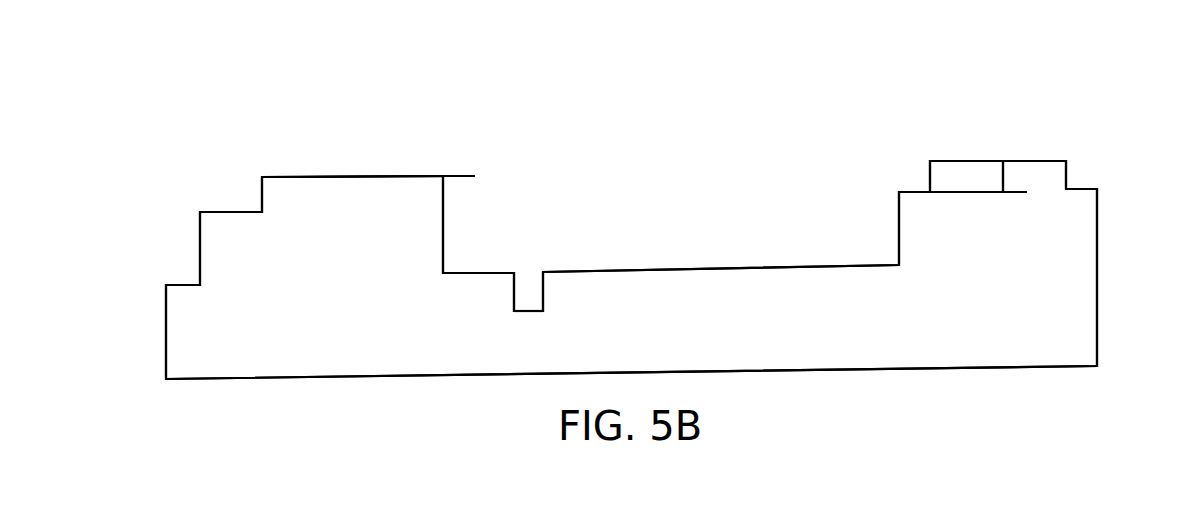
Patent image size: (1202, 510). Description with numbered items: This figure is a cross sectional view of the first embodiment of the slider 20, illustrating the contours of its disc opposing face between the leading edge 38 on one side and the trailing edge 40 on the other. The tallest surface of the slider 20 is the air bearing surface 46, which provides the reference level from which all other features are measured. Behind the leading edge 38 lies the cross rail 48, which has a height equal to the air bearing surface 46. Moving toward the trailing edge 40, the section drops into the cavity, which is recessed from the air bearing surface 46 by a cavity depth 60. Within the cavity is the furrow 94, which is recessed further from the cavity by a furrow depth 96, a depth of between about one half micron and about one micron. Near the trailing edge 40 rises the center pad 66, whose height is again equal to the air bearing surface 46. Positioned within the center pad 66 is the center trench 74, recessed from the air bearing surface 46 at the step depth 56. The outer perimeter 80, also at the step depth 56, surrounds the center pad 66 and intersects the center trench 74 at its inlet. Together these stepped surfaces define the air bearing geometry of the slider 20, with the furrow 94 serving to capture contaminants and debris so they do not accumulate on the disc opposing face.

The slider 20 is at (213, 81).
The leading edge 38 is at (172, 283).
The outer perimeter 80 is at (213, 197).
The cross rail 48 is at (300, 177).
The air bearing surface 46 is at (337, 176).
The cavity depth 60 is at (460, 273).
The furrow 94 is at (526, 287).
The furrow depth 96 is at (532, 340).
The center trench 74 is at (947, 190).
The center pad 66 is at (1023, 160).
The step depth 56 is at (1014, 130).
The trailing edge 40 is at (1098, 188).